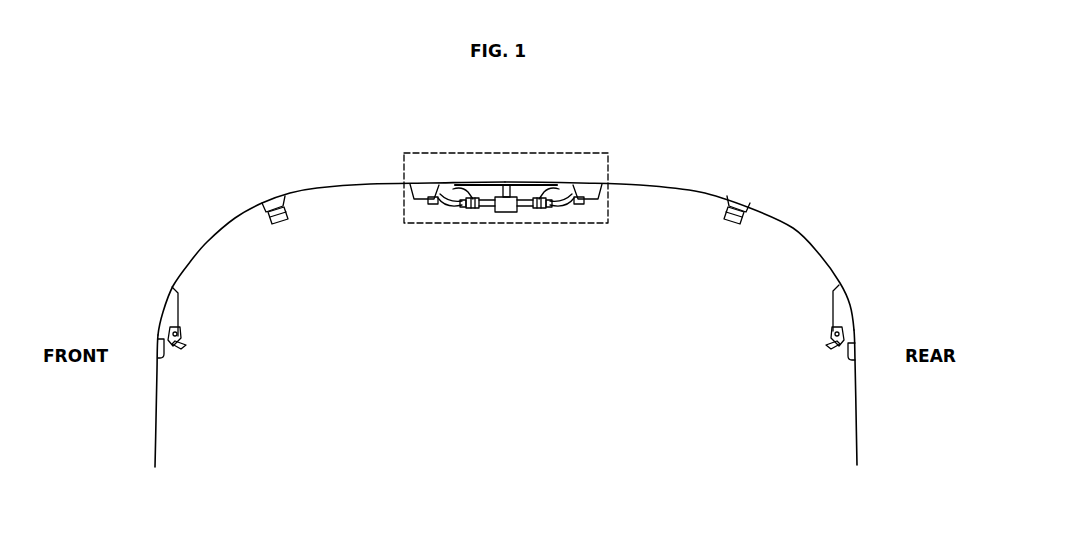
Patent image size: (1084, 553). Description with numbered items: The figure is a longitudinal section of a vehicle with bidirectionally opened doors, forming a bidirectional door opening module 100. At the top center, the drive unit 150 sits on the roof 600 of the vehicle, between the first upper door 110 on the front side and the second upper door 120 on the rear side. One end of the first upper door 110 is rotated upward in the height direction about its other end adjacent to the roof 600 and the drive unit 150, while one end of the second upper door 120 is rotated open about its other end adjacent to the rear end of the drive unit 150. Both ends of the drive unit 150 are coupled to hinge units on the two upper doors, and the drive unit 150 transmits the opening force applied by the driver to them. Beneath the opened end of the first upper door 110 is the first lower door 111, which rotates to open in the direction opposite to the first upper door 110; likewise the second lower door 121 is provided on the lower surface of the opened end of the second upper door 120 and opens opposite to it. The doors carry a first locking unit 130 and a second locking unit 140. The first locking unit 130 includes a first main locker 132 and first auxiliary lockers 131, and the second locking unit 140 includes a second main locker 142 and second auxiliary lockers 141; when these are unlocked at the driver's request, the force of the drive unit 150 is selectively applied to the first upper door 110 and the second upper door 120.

The bidirectional door opening module 100 is at (521, 108).
The first upper door 110 is at (207, 241).
The first lower door 111 is at (156, 413).
The second upper door 120 is at (793, 228).
The second lower door 121 is at (857, 418).
The first locking unit 130 is at (273, 289).
The first auxiliary lockers 131 is at (282, 218).
The first main locker 132 is at (238, 350).
The second locking unit 140 is at (739, 288).
The second auxiliary lockers 141 is at (738, 222).
The second main locker 142 is at (830, 338).
The drive unit 150 is at (590, 224).
The roof 600 is at (440, 181).